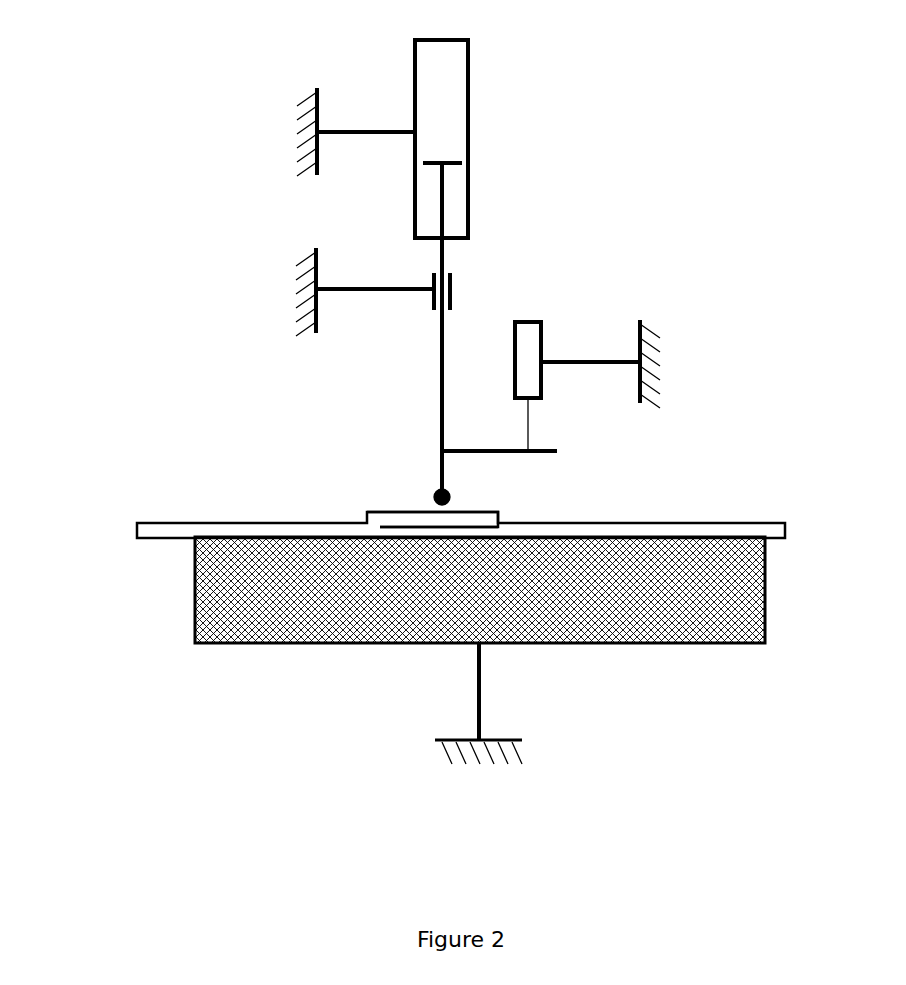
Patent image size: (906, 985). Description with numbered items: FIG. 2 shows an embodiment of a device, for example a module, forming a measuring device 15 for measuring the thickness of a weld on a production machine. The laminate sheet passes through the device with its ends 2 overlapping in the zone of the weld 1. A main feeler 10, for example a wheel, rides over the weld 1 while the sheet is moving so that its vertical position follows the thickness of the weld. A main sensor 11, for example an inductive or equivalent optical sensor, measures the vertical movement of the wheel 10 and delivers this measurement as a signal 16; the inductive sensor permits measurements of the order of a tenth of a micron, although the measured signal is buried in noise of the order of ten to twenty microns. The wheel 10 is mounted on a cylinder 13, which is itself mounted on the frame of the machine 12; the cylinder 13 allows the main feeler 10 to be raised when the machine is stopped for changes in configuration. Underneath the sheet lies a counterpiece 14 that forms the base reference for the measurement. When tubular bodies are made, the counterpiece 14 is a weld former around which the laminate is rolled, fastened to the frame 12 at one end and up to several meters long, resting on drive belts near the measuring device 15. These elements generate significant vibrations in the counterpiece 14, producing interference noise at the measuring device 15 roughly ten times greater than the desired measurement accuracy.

The weld 1 is at (360, 475).
The ends of the sheet 2 is at (205, 525).
The main feeler 10 is at (437, 492).
The main sensor 11 is at (543, 337).
The frame of the machine 12 is at (298, 110).
The cylinder 13 is at (470, 120).
The counterpiece 14 is at (217, 601).
The measuring device 15 is at (148, 125).
The signal from the main sensor 16 is at (530, 417).